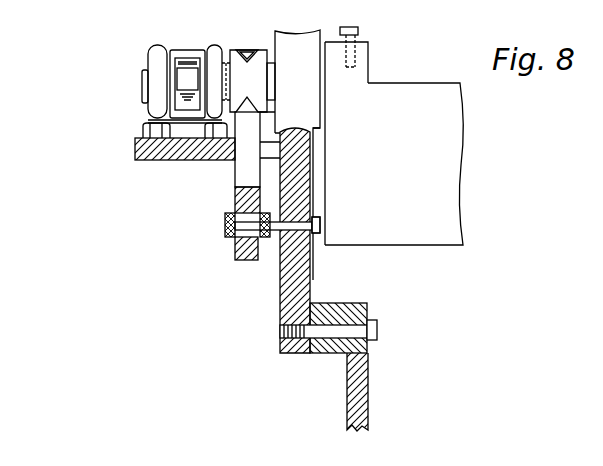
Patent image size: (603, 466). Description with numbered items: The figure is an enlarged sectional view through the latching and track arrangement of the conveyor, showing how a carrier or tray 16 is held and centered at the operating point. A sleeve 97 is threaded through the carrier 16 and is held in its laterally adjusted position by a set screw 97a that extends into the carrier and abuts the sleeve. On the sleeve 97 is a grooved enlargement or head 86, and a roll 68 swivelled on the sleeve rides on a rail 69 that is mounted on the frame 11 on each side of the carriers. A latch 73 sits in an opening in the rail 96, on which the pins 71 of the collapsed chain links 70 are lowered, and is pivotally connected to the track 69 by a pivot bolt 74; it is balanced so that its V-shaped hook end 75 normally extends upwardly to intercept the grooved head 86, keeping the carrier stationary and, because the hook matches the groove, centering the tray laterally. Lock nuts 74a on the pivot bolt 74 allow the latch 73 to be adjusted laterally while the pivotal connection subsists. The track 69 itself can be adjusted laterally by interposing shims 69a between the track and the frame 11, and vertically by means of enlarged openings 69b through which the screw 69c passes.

The pin 71 is at (143, 63).
The link 70 is at (190, 50).
The rail 96 is at (170, 161).
The grooved head 86 is at (231, 50).
The hook end 75 is at (247, 50).
The latch 73 is at (235, 181).
The roll 68 is at (303, 35).
The sleeve 97 is at (322, 62).
The set screw 97a is at (358, 31).
The carrier 16 is at (394, 164).
The rail 69 is at (280, 301).
The pivot bolt 74 is at (232, 238).
The lock nut 74a is at (316, 233).
The shim 69a is at (340, 303).
The enlarged opening 69b is at (368, 321).
The screw 69c is at (378, 332).
The frame 11 is at (370, 401).